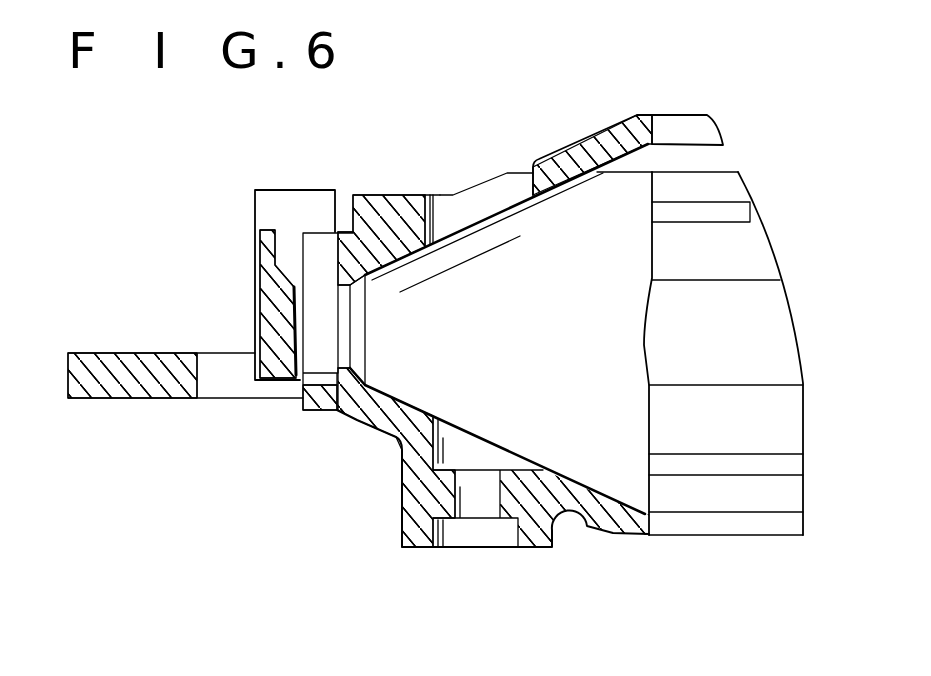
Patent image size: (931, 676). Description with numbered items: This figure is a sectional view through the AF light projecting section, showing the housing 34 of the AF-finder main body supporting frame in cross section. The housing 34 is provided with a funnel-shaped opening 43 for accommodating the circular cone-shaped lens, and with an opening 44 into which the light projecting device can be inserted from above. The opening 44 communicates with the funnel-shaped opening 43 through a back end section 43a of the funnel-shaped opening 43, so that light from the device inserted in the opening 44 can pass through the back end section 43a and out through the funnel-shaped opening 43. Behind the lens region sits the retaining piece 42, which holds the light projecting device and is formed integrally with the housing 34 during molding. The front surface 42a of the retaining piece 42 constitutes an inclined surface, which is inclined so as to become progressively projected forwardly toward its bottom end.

The housing 34 is at (601, 82).
The retaining piece 42 is at (316, 285).
The front surface of the retaining piece 42a is at (292, 333).
The funnel-shaped opening 43 is at (493, 370).
The back end section of the funnel-shaped opening 43a is at (343, 348).
The opening 44 is at (328, 243).